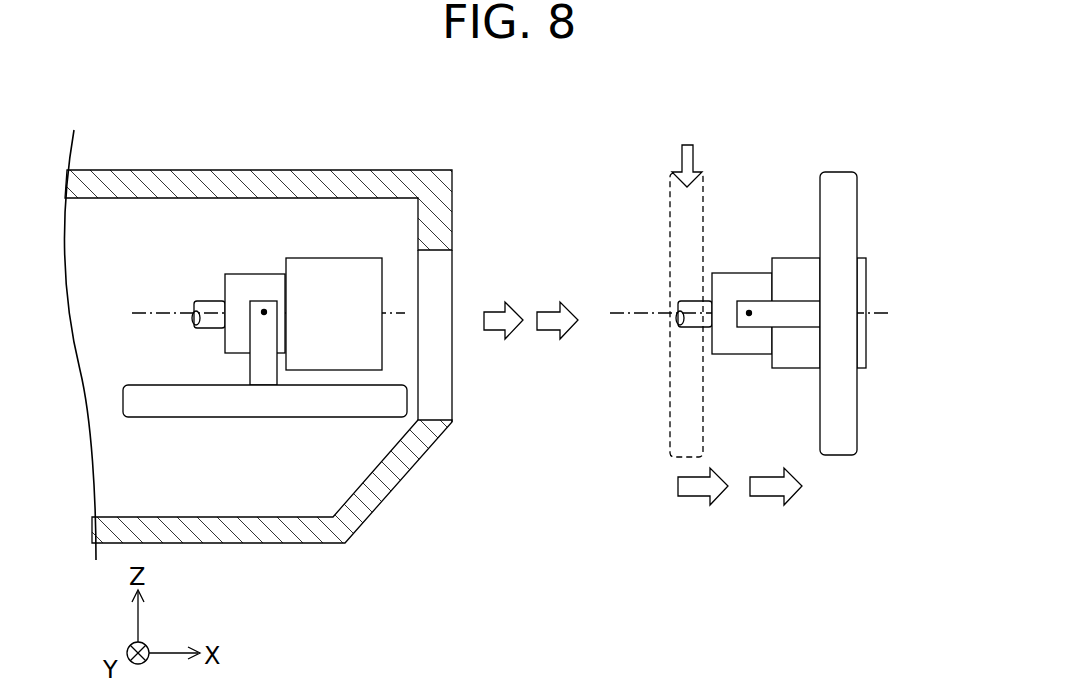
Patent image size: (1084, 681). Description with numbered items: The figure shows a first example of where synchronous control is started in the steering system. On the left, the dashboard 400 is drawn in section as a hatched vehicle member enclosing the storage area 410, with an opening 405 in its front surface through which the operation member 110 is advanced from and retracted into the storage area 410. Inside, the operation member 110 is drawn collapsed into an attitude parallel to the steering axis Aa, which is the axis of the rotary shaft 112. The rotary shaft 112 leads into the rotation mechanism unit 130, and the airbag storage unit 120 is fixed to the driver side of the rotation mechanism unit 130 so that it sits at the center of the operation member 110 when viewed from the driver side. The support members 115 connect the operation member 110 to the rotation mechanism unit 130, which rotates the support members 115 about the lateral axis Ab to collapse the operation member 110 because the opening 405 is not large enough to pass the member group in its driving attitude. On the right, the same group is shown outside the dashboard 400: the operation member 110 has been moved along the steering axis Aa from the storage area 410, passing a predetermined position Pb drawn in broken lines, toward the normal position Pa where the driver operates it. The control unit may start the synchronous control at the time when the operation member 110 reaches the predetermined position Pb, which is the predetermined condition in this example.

The dashboard 400 is at (272, 170).
The opening 405 is at (440, 278).
The storage area 410 is at (199, 479).
The operation member 110 is at (300, 417).
The rotary shaft 112 is at (207, 300).
The support members 115 is at (250, 368).
The airbag storage unit 120 is at (336, 258).
The rotation mechanism unit 130 is at (272, 274).
The steering axis Aa is at (157, 313).
The lateral axis Ab is at (264, 312).
The normal position Pa is at (838, 152).
The predetermined position Pb is at (686, 124).